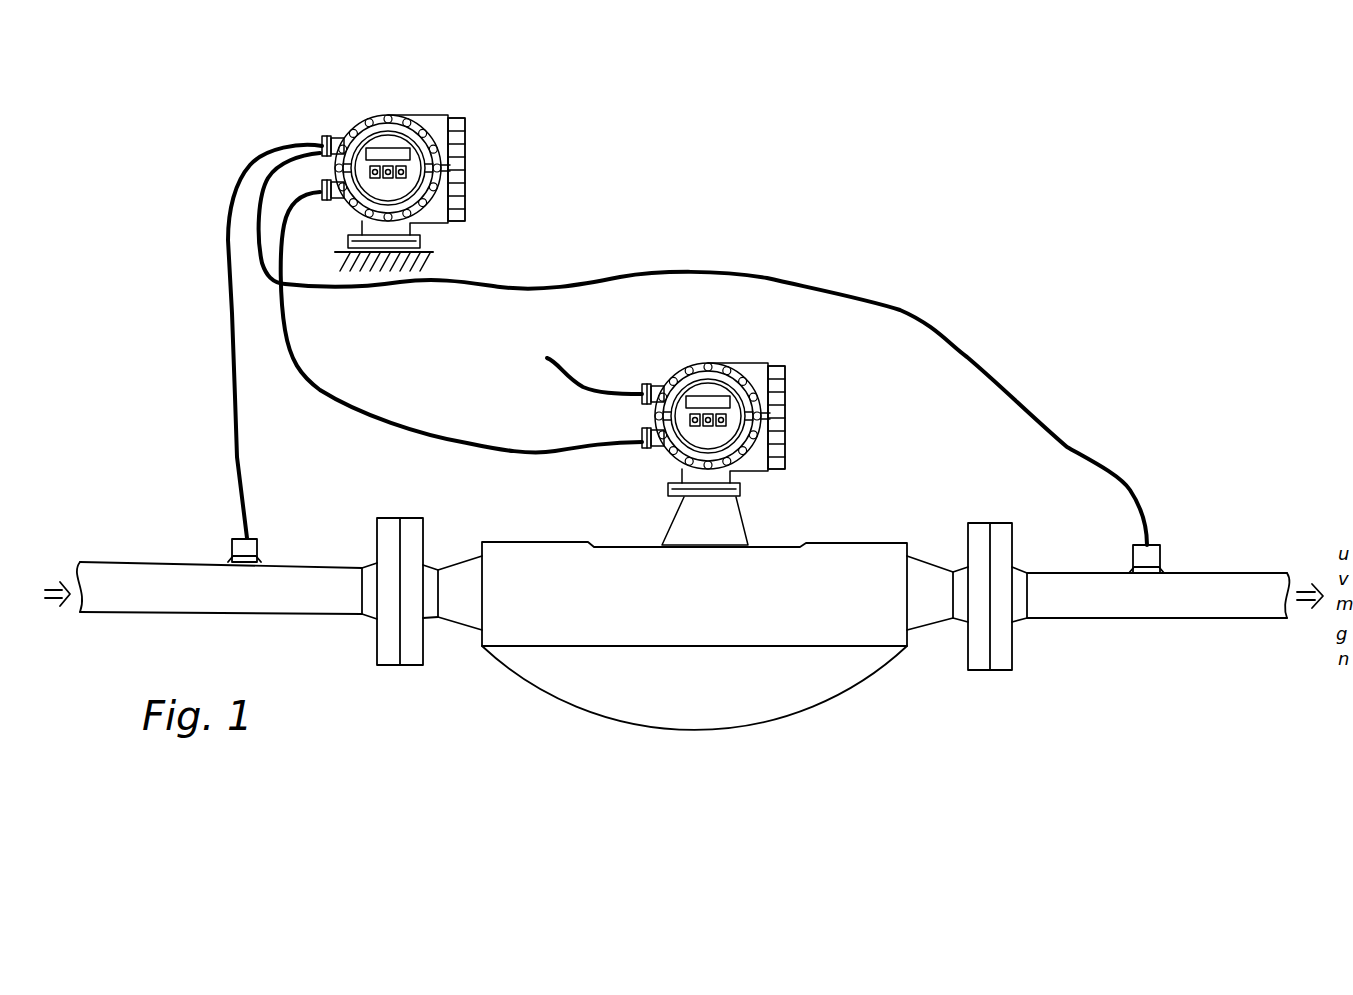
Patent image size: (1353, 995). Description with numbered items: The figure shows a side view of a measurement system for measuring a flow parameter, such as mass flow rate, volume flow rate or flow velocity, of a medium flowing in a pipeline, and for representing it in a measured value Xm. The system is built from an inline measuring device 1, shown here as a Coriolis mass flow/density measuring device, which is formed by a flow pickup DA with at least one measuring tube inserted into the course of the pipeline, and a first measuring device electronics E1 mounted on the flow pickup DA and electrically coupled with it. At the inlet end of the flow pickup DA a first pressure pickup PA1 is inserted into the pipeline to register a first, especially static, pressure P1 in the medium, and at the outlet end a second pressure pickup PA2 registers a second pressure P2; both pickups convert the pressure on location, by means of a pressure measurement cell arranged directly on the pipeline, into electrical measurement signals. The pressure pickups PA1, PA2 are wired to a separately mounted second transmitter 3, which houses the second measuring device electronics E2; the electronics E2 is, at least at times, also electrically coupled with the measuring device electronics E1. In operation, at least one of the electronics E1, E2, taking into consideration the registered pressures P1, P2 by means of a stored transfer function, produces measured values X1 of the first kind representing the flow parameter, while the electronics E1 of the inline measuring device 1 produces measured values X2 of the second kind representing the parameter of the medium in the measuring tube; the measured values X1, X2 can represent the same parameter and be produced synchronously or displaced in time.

The inline measuring device 1 is at (728, 333).
The evaluation electronics / second transmitter 3 is at (392, 87).
The first measuring device electronics E1 is at (806, 436).
The second measuring device electronics E2 is at (509, 182).
The measured values of the first kind X1 is at (687, 345).
The measured values of the second kind X2 is at (488, 426).
The measured value Xm is at (513, 357).
The first pressure pickup PA1 is at (240, 557).
The second pressure pickup PA2 is at (1155, 560).
The first pressure P1 is at (279, 591).
The second pressure P2 is at (1098, 596).
The flow pickup DA is at (694, 636).